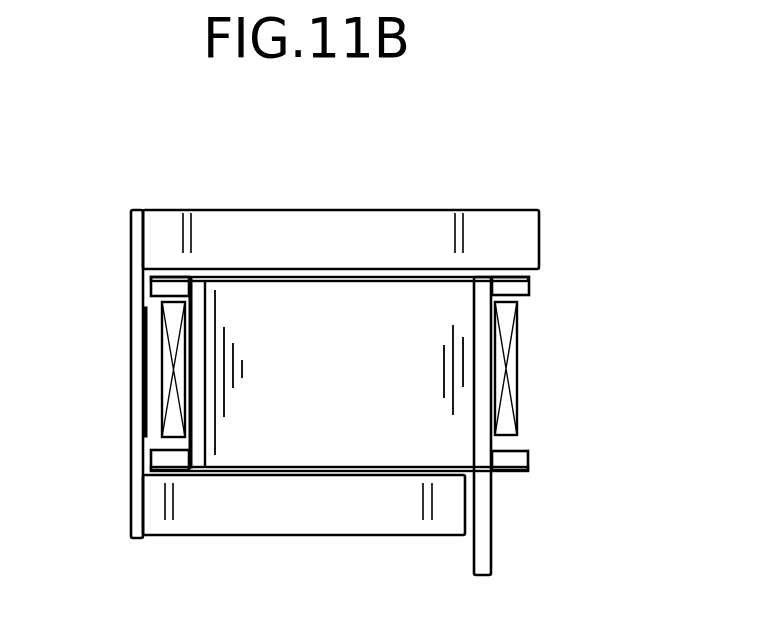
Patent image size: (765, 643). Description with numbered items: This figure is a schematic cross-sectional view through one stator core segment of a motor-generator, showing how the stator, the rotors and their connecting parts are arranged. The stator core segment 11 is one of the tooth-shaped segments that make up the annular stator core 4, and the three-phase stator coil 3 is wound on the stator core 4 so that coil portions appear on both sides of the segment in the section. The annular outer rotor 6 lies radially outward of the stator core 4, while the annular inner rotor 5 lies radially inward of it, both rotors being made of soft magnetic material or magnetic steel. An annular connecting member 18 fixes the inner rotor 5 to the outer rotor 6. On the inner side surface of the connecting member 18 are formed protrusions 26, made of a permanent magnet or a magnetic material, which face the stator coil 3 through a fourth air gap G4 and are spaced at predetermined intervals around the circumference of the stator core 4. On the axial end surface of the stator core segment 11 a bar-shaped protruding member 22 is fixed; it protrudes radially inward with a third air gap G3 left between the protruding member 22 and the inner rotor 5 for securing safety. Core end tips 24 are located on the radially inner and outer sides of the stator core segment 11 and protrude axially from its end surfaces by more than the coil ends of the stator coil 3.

The annular connecting member 18 is at (130, 282).
The annular outer rotor 6 is at (303, 210).
The annular inner rotor 5 is at (316, 537).
The core end tips 24 is at (530, 283).
The bar-shaped protruding member 22 is at (492, 530).
The stator core segment 11 is at (199, 290).
The annular stator core 4 is at (393, 290).
The protrusions 26 is at (147, 350).
The three-phase stator coil 3 is at (158, 403).
The fourth air gap G4 is at (156, 425).
The third air gap G3 is at (468, 528).